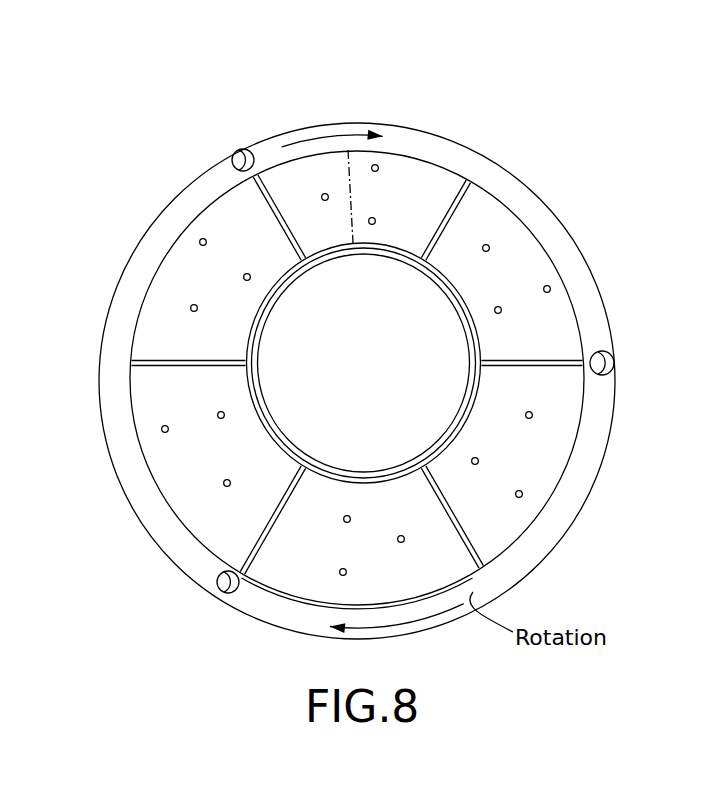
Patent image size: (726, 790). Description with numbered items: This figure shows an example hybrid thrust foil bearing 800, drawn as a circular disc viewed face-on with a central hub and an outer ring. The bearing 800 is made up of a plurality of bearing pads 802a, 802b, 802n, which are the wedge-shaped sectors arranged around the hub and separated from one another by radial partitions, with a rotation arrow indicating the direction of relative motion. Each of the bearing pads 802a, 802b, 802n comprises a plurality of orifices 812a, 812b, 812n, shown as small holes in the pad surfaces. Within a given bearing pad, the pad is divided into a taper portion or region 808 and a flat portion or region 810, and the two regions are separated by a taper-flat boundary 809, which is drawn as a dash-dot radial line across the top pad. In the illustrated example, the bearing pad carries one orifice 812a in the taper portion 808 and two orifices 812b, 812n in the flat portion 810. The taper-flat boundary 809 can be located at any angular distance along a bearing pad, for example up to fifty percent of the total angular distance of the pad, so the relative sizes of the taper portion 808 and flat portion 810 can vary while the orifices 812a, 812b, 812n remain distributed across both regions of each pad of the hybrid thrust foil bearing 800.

The hybrid thrust foil bearing 800 is at (484, 142).
The bearing pad 802a is at (376, 162).
The bearing pad 802b is at (556, 327).
The bearing pad 802n is at (549, 448).
The taper portion 808 is at (279, 183).
The taper-flat boundary 809 is at (348, 150).
The flat portion 810 is at (424, 177).
The orifice 812a is at (325, 194).
The orifice 812b is at (376, 165).
The orifice 812n is at (372, 224).